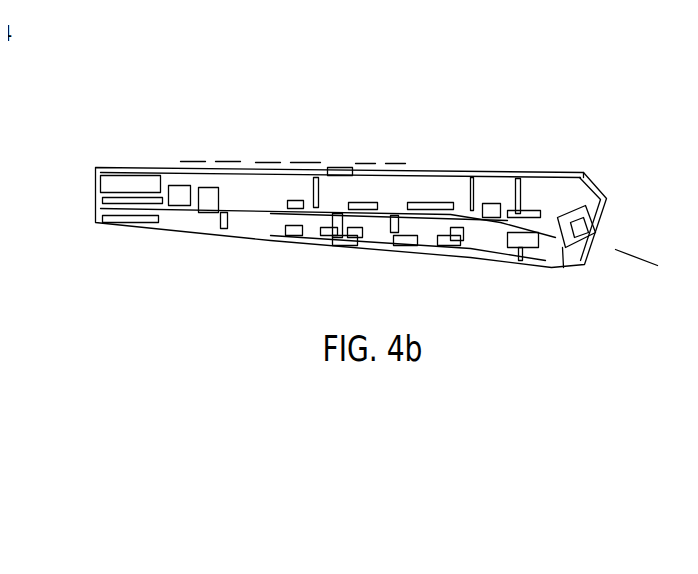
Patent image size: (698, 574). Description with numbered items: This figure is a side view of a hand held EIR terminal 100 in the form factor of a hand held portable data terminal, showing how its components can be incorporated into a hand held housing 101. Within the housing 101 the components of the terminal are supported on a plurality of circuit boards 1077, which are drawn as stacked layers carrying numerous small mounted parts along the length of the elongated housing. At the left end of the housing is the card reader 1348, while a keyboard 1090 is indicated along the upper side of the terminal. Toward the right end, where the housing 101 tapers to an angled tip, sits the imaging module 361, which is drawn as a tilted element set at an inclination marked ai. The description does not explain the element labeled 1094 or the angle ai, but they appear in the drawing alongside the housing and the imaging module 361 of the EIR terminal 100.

The EIR terminal 100 is at (539, 88).
The tip section body 1094 is at (533, 133).
The hand held housing 101 is at (567, 157).
The circuit boards 1077 is at (471, 172).
The keyboard 1090 is at (234, 156).
The card reader 1348 is at (83, 197).
The imaging module 361 is at (597, 214).
The angle of inclination ai is at (603, 222).